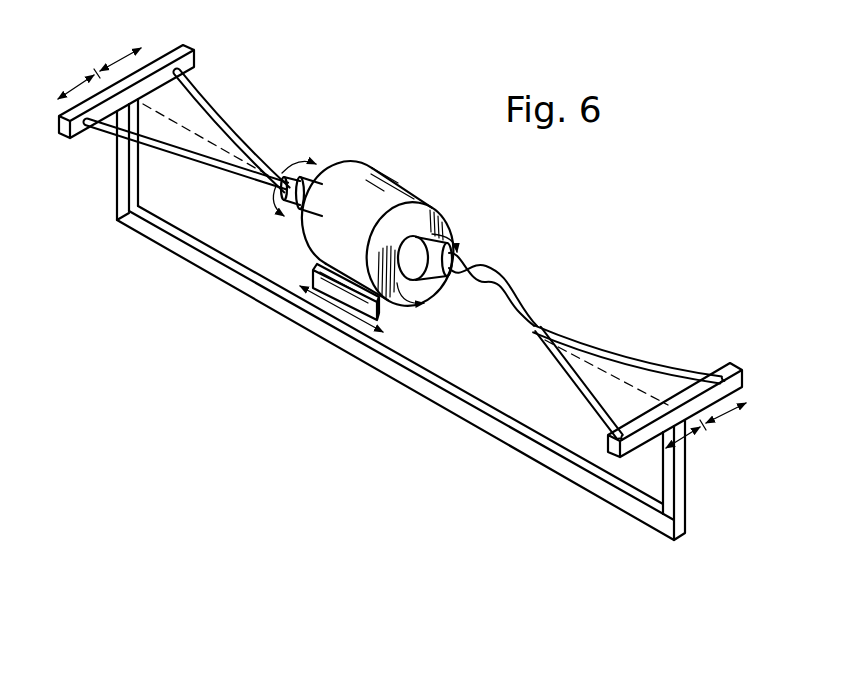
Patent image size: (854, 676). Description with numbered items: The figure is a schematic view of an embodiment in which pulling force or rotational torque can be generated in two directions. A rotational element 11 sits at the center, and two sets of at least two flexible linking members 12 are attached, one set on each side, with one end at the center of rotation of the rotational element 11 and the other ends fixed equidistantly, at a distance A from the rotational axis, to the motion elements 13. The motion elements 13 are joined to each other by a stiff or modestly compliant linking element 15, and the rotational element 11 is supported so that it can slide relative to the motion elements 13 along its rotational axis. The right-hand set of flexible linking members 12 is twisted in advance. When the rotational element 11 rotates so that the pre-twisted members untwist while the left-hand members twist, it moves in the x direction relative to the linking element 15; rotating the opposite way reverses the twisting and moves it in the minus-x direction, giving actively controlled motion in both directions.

The rotational element 11 is at (350, 188).
The flexible linking members 12 is at (226, 128).
The motion elements 13 is at (60, 136).
The linking element 15 is at (178, 244).